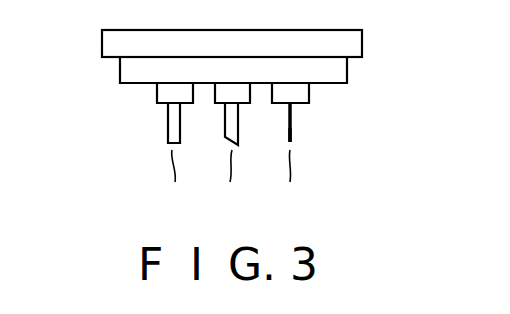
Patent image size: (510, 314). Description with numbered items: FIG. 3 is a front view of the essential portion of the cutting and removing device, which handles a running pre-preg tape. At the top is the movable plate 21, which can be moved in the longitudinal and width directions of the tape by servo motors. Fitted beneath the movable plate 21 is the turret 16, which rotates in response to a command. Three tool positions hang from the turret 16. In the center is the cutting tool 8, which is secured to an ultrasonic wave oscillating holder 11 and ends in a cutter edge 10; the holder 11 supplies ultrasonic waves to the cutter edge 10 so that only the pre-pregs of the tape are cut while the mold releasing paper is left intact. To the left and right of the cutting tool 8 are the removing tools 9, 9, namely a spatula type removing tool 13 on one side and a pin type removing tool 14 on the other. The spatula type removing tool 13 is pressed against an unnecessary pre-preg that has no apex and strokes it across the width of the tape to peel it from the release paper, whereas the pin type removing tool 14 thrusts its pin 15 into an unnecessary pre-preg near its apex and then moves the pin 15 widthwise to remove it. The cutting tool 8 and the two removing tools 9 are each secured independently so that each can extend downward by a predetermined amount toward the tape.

The movable plate 21 is at (358, 47).
The turret 16 is at (120, 70).
The ultrasonic wave oscillating holder 11 is at (217, 94).
The spatula type removing tool 13 is at (172, 128).
The cutter edge 10 is at (232, 127).
The pin 15 is at (293, 118).
The pin type removing tool 14 is at (295, 140).
The removing tools 9 is at (185, 217).
The cutting tool 8 is at (242, 217).